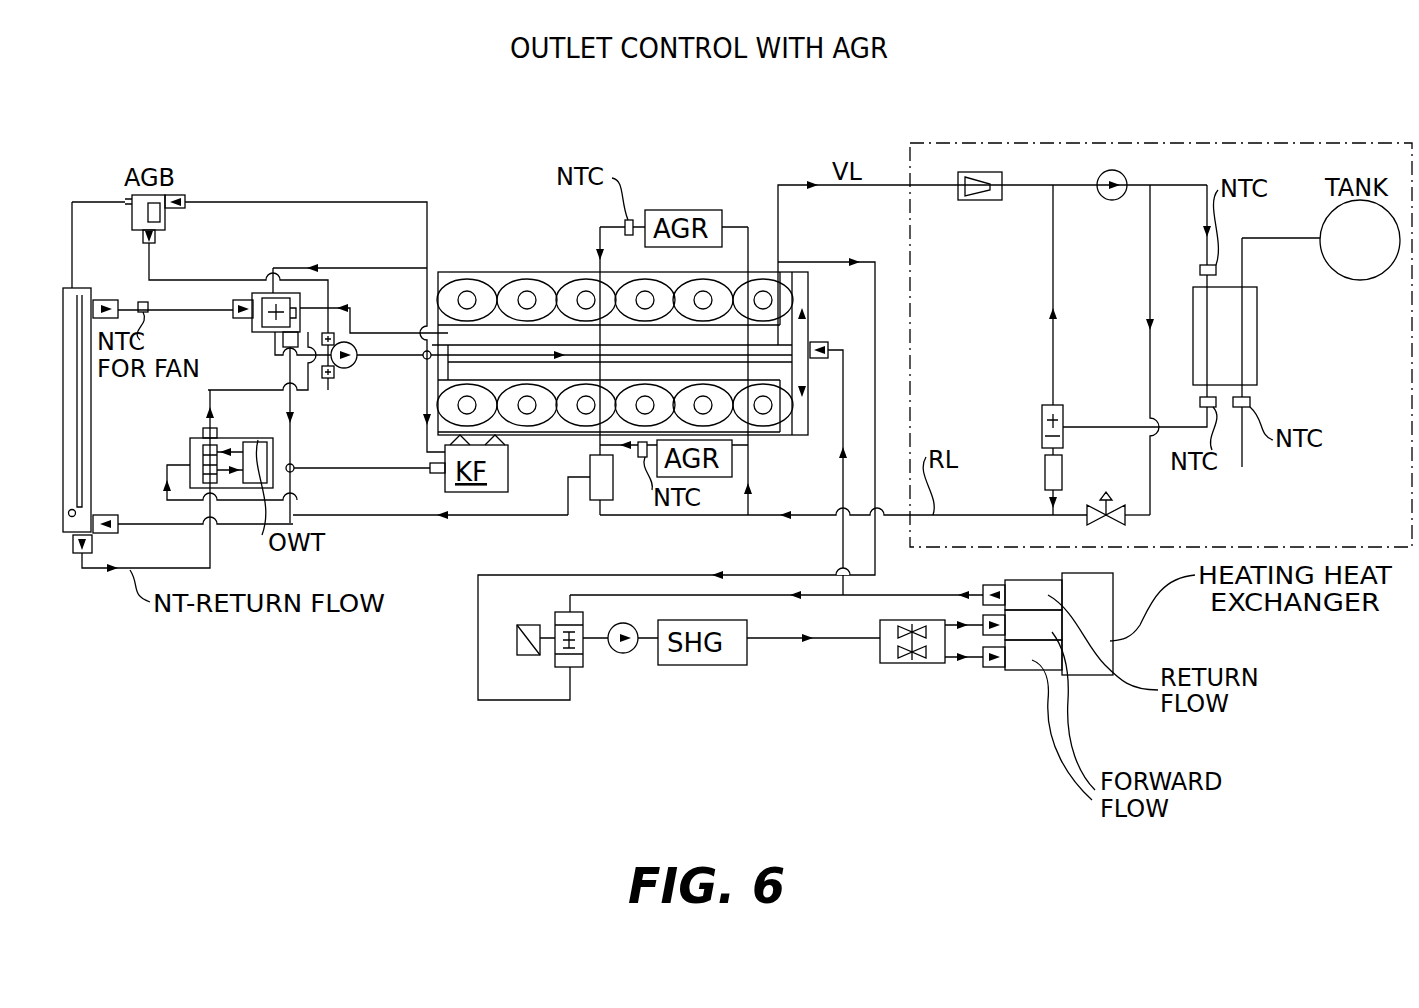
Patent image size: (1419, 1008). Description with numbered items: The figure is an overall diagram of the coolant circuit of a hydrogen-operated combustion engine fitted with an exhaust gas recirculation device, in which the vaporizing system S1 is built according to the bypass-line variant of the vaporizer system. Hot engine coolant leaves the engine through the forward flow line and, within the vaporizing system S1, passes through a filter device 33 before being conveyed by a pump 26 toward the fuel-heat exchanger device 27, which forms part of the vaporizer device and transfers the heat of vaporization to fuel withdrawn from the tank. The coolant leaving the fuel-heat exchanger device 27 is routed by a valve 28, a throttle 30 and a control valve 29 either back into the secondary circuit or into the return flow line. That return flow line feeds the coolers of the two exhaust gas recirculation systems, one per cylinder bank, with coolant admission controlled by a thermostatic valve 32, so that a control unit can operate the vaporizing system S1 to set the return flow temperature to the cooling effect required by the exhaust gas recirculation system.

The vaporizing system S1 is at (1252, 143).
The pump 26 is at (1110, 200).
The fuel-heat exchanger device 27 is at (1257, 315).
The valve 28 is at (1053, 378).
The valve 29 is at (1122, 520).
The throttle 30 is at (1045, 468).
The thermostatic valve 32 is at (590, 496).
The filter device 33 is at (978, 200).